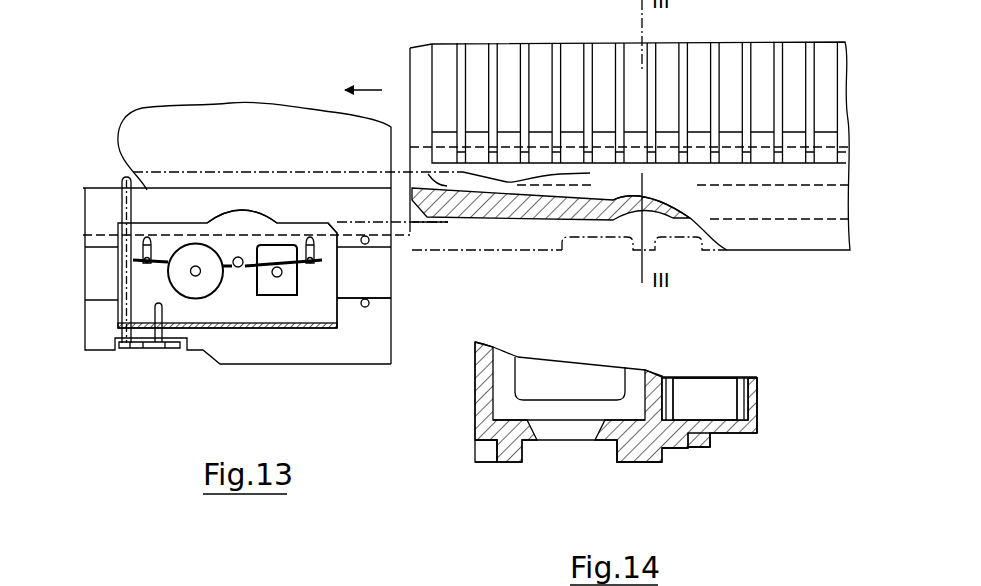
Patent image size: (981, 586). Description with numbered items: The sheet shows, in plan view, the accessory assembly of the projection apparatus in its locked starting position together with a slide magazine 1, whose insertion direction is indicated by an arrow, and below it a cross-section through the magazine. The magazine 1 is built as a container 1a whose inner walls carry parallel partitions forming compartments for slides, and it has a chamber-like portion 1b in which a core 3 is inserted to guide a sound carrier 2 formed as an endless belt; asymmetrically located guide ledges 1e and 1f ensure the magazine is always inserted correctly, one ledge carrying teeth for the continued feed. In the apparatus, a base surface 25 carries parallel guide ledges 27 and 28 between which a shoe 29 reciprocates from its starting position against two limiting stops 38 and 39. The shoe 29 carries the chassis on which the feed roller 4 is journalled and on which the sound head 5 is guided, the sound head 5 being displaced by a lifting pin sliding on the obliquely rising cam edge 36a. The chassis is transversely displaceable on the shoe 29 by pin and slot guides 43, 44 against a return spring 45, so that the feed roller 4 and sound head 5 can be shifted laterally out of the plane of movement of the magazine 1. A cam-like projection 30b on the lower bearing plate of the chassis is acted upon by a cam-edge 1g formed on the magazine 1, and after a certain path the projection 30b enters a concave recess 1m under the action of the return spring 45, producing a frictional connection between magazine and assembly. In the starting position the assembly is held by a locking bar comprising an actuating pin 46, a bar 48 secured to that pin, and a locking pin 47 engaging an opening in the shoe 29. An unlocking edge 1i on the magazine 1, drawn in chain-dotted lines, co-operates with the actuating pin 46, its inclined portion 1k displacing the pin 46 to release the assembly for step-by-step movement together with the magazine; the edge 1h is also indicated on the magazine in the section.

In FIG. 13, the magazine 1 is at (756, 261).
In FIG. 14, the magazine 1 is at (583, 469).
In FIG. 13, the container 1a is at (730, 57).
In FIG. 14, the container 1a is at (563, 377).
In FIG. 14, the chamber-like portion 1b is at (757, 388).
In FIG. 14, the guide ledge 1e is at (640, 452).
In FIG. 14, the guide ledge 1f is at (513, 458).
In FIG. 13, the cam-edge 1g is at (495, 221).
In FIG. 14, the cam-edge 1g is at (710, 438).
In FIG. 13, the edge 1h is at (421, 222).
In FIG. 14, the edge 1h is at (700, 446).
In FIG. 13, the unlocking edge 1i is at (446, 185).
In FIG. 13, the inclined portion 1k is at (542, 177).
In FIG. 13, the concave recess 1m is at (668, 203).
In FIG. 14, the sound carrier 2 is at (668, 378).
In FIG. 14, the core 3 is at (707, 390).
In FIG. 13, the feed roller 4 is at (204, 288).
In FIG. 13, the sound head 5 is at (288, 288).
In FIG. 13, the base surface 25 is at (176, 113).
In FIG. 13, the guide ledge 27 is at (343, 210).
In FIG. 13, the guide ledge 28 is at (355, 333).
In FIG. 13, the shoe 29 is at (352, 278).
In FIG. 13, the cam-like projection 30b is at (223, 207).
In FIG. 13, the cam edge 36a is at (277, 358).
In FIG. 13, the limiting stop 38 is at (368, 308).
In FIG. 13, the limiting stop 39 is at (365, 232).
In FIG. 13, the pin and slot guide 43 is at (147, 266).
In FIG. 13, the pin and slot guide 44 is at (150, 245).
In FIG. 13, the return spring 45 is at (240, 258).
In FIG. 13, the actuating pin 46 is at (127, 342).
In FIG. 13, the locking pin 47 is at (168, 344).
In FIG. 13, the bar 48 is at (147, 344).